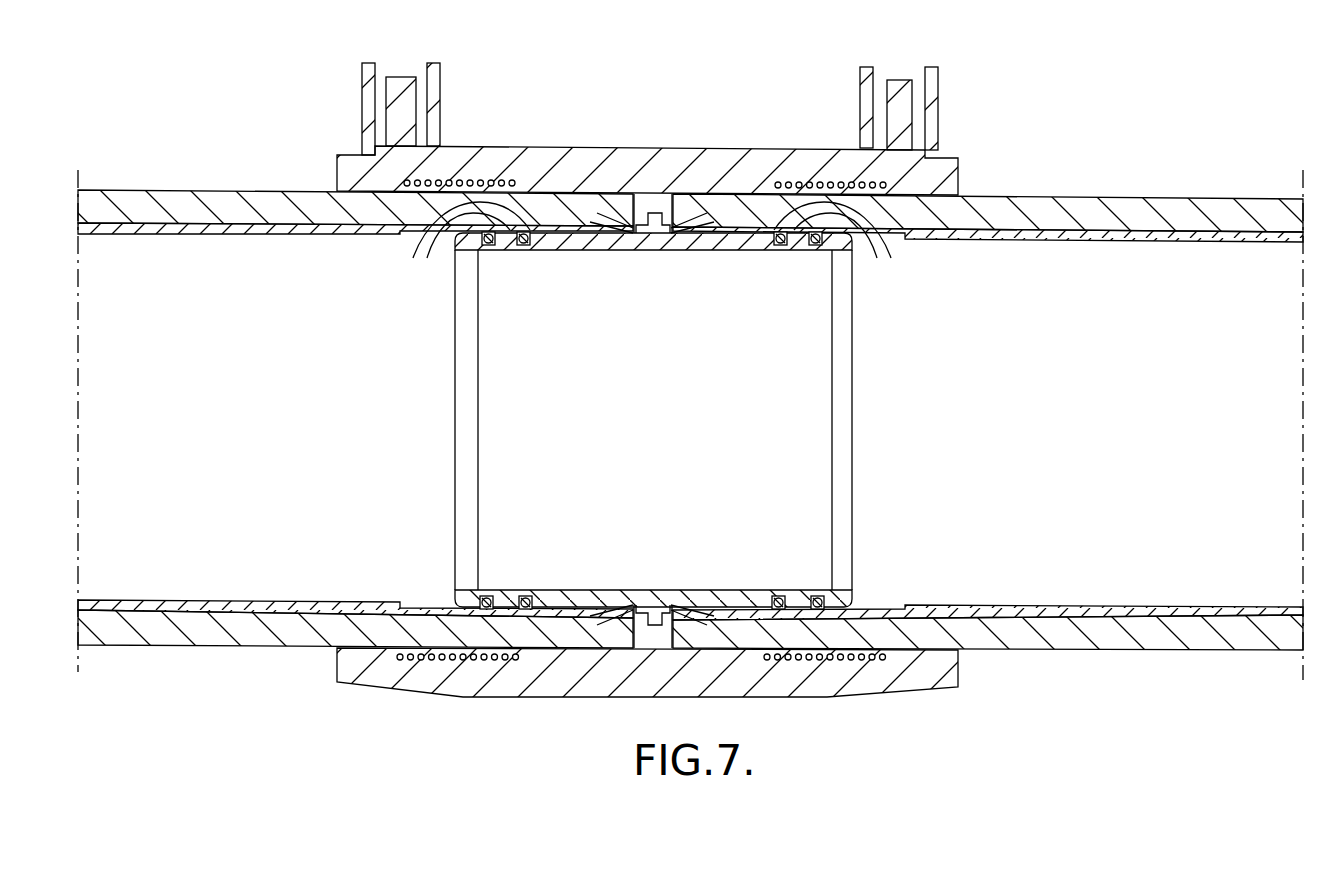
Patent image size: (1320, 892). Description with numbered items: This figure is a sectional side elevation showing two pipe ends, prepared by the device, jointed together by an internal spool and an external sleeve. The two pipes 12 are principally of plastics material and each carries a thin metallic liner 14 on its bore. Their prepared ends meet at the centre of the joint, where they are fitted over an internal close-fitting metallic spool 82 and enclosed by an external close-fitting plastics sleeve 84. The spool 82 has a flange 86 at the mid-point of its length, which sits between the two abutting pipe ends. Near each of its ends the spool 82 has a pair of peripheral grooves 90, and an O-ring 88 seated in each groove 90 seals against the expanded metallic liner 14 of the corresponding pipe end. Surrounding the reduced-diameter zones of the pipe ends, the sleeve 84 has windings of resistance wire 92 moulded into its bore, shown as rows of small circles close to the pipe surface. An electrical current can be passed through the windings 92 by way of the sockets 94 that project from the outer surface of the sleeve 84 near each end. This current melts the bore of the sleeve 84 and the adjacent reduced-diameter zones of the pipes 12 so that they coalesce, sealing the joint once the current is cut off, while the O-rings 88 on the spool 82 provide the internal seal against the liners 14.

The pipe 12 is at (228, 200).
The metallic liner 14 is at (248, 231).
The internal spool 82 is at (595, 250).
The external sleeve 84 is at (640, 160).
The flange 86 is at (664, 215).
The O-ring 88 is at (416, 258).
The peripheral groove 90 is at (492, 245).
The resistance wire windings 92 is at (463, 183).
The socket 94 is at (398, 68).